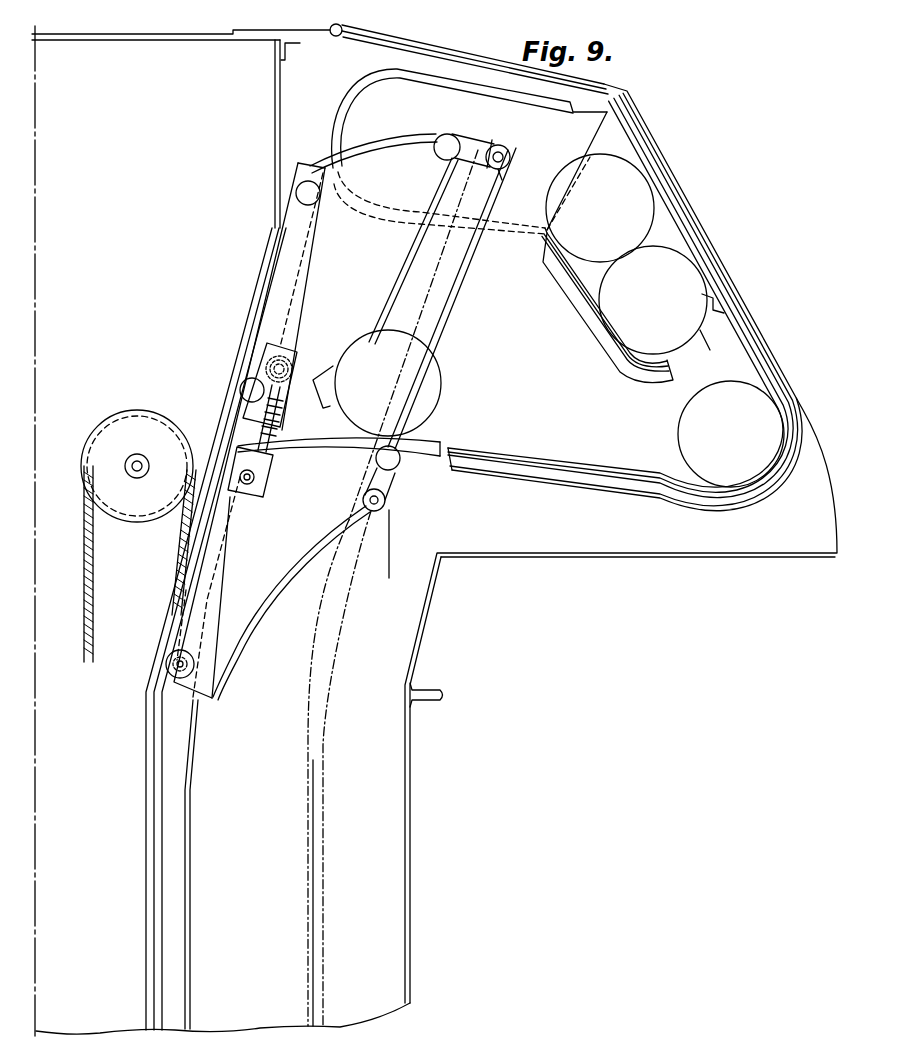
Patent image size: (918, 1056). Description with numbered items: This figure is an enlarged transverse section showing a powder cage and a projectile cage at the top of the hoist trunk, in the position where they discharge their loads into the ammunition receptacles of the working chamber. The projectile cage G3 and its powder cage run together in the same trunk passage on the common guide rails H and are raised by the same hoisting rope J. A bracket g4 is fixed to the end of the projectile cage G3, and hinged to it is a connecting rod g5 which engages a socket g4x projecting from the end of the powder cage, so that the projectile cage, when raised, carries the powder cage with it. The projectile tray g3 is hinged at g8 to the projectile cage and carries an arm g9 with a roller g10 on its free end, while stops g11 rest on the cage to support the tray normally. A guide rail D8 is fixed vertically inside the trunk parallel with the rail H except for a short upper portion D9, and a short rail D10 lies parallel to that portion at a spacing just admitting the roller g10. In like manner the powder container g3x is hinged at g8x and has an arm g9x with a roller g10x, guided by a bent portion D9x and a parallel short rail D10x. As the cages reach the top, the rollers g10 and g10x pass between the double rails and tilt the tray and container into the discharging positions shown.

The common guide rails H is at (166, 830).
The hoisting rope J is at (90, 622).
The projectile cage G3 is at (218, 643).
The powder container g3x is at (453, 142).
The hinge of powder container g8x is at (496, 142).
The arm of powder container g9x is at (510, 155).
The roller of powder container g10x is at (502, 177).
The short rail for powder cage D10x is at (461, 190).
The bent portion of powder guide rail D9x is at (447, 260).
The bent upper portion of guide rail D9 is at (365, 552).
The guide rail D8 is at (324, 807).
The short rail D10 is at (389, 580).
The projectile tray g3 is at (330, 388).
The stops g11 is at (326, 410).
The socket g4x is at (265, 368).
The connecting rod g5 is at (257, 450).
The bracket g4 is at (258, 496).
The hinge of projectile tray g8 is at (394, 466).
The arm of projectile tray g9 is at (383, 507).
The roller of projectile tray g10 is at (382, 528).